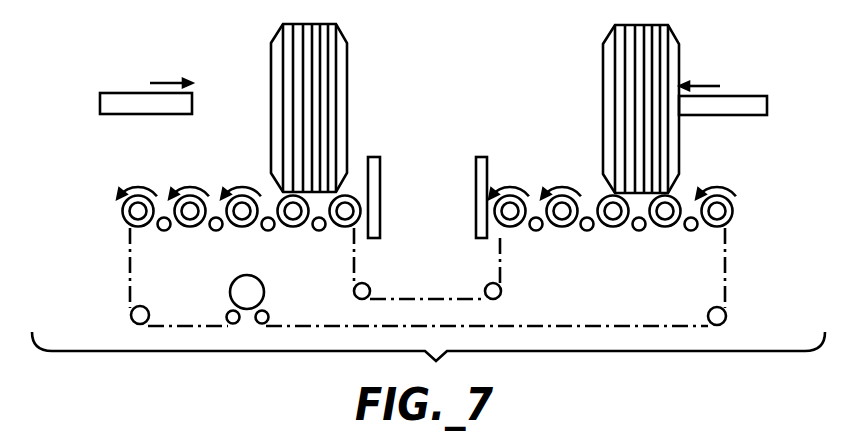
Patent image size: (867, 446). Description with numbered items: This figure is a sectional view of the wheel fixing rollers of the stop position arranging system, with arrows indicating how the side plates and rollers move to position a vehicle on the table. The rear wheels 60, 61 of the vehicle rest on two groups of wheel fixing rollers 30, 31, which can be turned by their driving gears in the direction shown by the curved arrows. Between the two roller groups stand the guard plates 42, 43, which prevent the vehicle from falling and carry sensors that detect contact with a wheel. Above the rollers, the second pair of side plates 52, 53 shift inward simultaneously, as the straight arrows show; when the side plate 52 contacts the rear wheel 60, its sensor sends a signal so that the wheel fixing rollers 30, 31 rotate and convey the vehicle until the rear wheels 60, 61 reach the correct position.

The wheel fixing roller 30 is at (745, 203).
The wheel fixing roller 31 is at (116, 201).
The guard plate 42 is at (481, 158).
The guard plate 43 is at (380, 172).
The side plate 52 is at (753, 96).
The side plate 53 is at (146, 93).
The rear wheel 60 is at (608, 42).
The rear wheel 61 is at (339, 33).